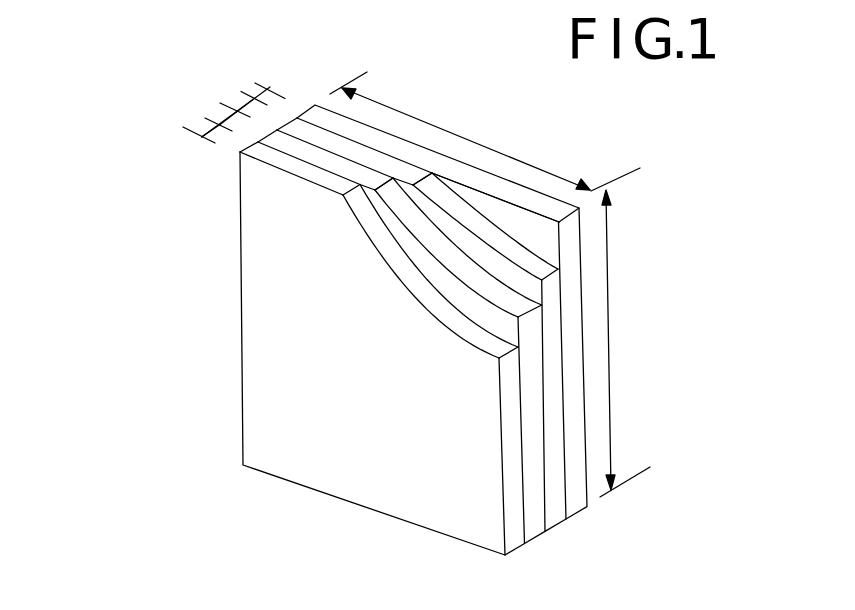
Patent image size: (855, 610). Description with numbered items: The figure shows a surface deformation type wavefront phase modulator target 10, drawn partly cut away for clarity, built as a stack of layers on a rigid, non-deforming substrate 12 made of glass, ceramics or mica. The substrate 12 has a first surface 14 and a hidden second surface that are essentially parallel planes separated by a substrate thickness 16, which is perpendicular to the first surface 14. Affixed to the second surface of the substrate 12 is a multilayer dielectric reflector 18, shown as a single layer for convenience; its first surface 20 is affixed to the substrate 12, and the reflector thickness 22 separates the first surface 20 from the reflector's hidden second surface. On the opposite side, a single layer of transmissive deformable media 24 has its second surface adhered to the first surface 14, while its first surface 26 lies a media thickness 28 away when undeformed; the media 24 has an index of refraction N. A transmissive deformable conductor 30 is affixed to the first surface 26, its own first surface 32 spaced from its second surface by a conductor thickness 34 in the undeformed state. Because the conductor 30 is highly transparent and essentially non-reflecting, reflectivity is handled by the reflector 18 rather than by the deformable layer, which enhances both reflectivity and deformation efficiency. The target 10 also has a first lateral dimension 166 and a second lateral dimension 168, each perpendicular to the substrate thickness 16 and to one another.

The surface deformation type wavefront phase modulator target 10 is at (225, 435).
The substrate 12 is at (555, 292).
The first surface 14 is at (458, 238).
The substrate thickness 16 is at (250, 95).
The multilayer dielectric reflector 18 is at (575, 255).
The first surface 20 is at (458, 193).
The reflector thickness 22 is at (254, 88).
The transmissive deformable media 24 is at (532, 337).
The first surface 26 is at (457, 288).
The media thickness 28 is at (232, 108).
The transmissive deformable conductor 30 is at (512, 385).
The first surface 32 is at (435, 495).
The conductor thickness 34 is at (197, 121).
The first lateral dimension 166 is at (548, 157).
The second lateral dimension 168 is at (613, 233).